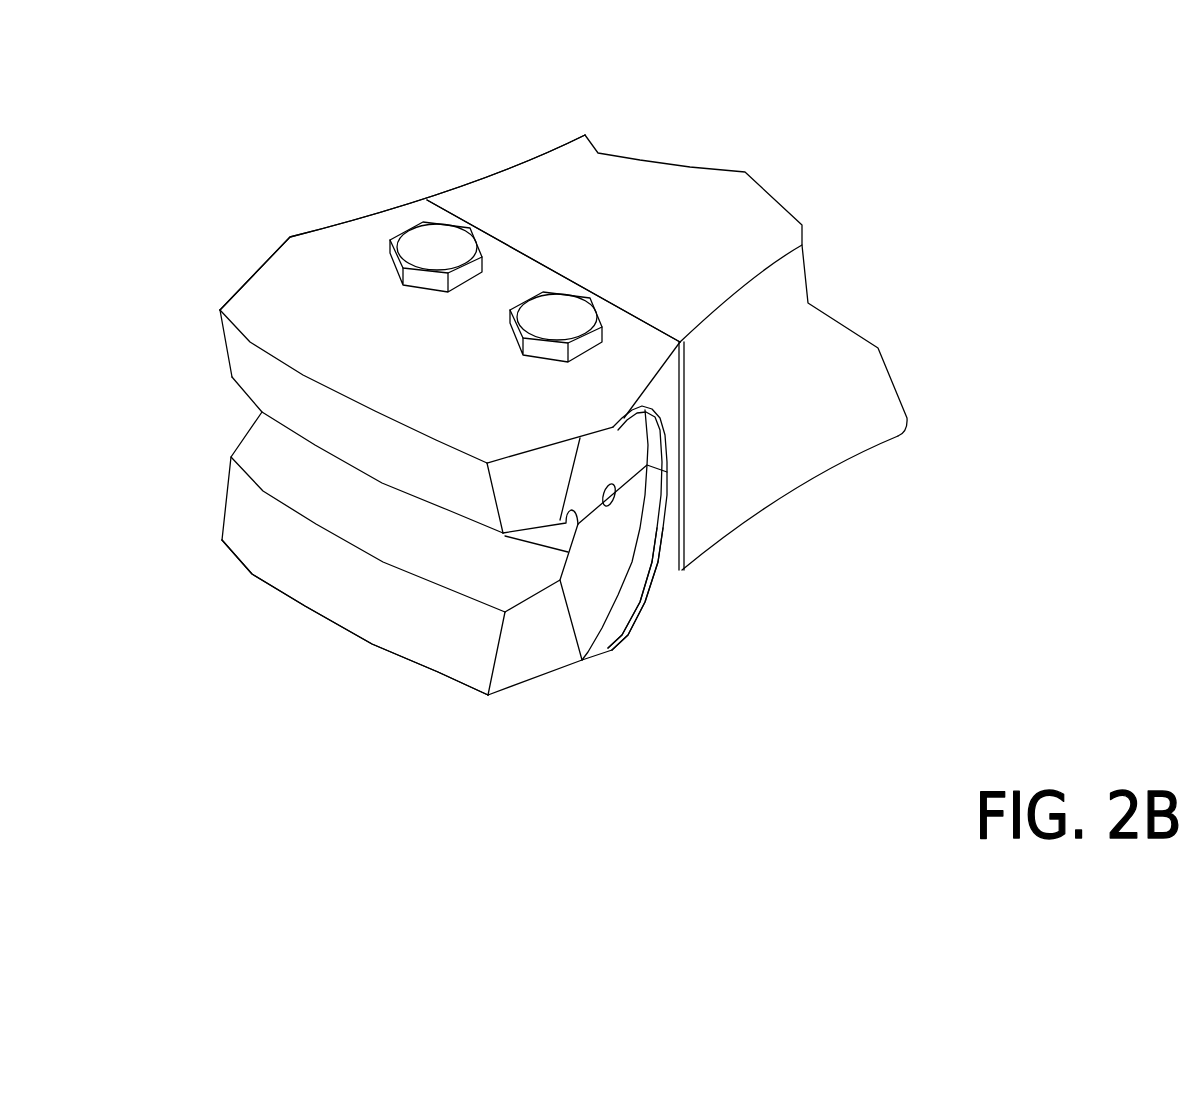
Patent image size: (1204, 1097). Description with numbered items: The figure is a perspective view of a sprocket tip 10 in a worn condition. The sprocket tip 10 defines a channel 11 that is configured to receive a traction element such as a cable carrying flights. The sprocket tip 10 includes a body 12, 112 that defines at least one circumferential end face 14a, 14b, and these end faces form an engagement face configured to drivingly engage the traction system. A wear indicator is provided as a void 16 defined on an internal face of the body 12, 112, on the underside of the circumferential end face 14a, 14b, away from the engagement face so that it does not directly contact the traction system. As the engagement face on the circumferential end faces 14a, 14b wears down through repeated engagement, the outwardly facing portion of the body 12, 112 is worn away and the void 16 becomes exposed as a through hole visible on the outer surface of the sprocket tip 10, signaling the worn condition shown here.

The sprocket tip 10 is at (543, 695).
The channel 11 is at (417, 542).
The body 12 is at (577, 622).
The circumferential end face 14a is at (603, 590).
The circumferential end face 14b is at (375, 210).
The void 16 is at (614, 495).
The body 112 is at (275, 282).